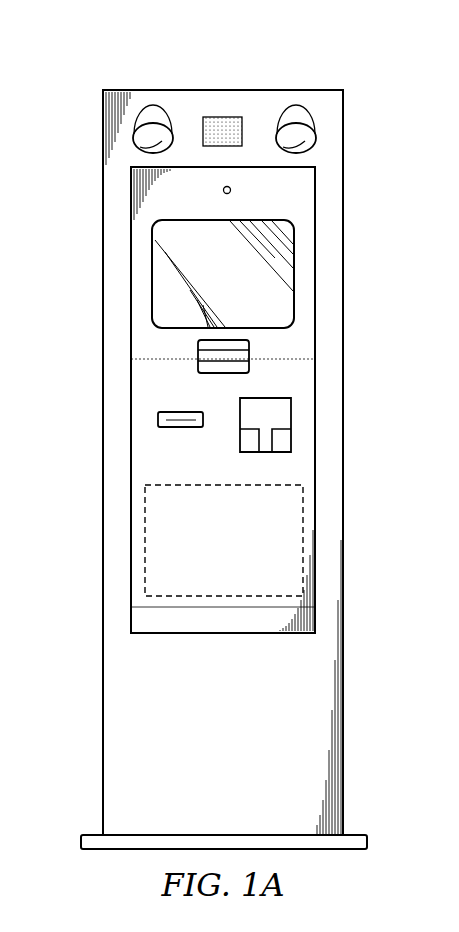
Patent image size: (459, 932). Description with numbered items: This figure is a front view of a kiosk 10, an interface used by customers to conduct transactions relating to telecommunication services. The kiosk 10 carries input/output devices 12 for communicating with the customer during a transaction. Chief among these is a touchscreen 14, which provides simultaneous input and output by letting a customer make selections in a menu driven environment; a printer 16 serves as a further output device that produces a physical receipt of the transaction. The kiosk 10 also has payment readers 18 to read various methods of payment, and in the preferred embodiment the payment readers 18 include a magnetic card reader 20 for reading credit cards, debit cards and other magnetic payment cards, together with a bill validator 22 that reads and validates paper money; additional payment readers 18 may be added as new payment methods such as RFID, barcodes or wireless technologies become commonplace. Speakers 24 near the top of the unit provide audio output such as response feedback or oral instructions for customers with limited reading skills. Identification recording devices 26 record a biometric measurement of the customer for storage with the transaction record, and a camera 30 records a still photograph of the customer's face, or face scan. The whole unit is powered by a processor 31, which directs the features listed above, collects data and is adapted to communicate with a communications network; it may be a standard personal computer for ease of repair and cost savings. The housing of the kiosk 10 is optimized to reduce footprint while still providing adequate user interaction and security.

The kiosk 10 is at (192, 430).
The input/output devices 12 is at (121, 408).
The touchscreen 14 is at (213, 280).
The printer 16 is at (187, 430).
The payment readers 18 is at (270, 343).
The magnetic card reader 20 is at (196, 364).
The bill validator 22 is at (278, 417).
The speakers 24 is at (140, 141).
The identification recording devices 26 is at (230, 191).
The camera 30 is at (220, 116).
The processor 31 is at (218, 570).